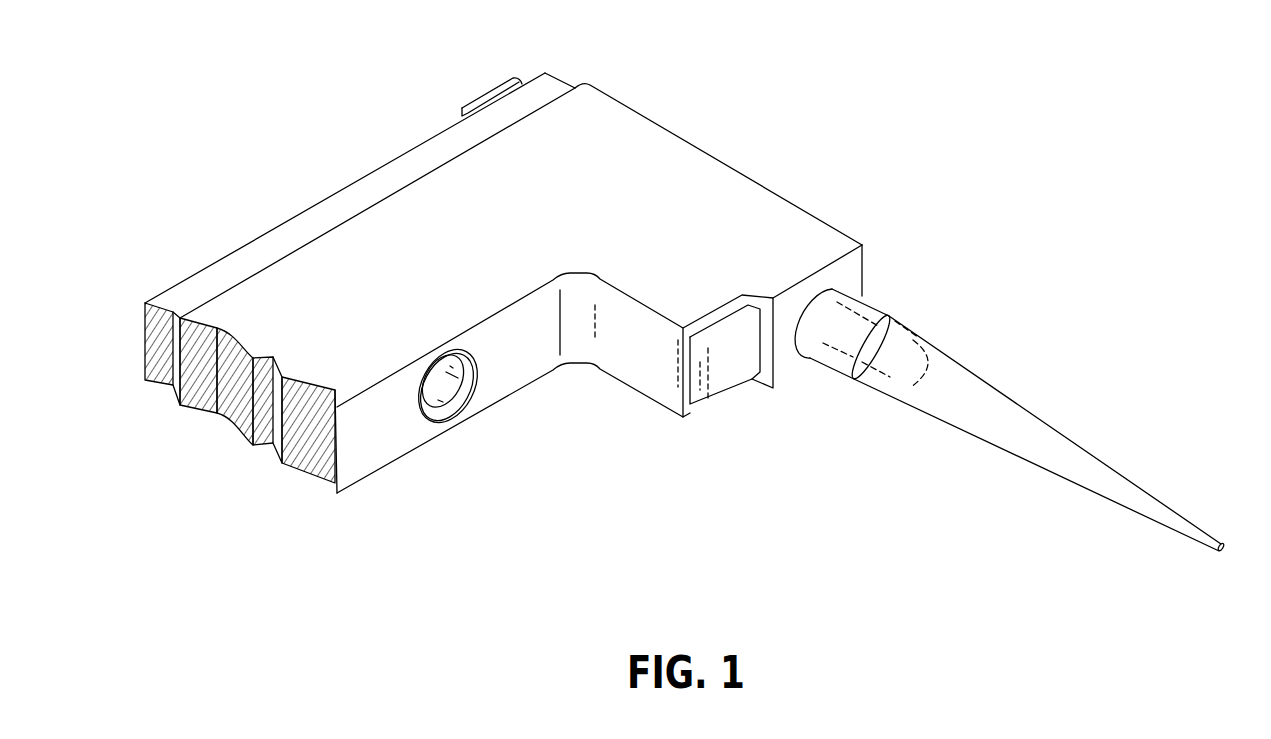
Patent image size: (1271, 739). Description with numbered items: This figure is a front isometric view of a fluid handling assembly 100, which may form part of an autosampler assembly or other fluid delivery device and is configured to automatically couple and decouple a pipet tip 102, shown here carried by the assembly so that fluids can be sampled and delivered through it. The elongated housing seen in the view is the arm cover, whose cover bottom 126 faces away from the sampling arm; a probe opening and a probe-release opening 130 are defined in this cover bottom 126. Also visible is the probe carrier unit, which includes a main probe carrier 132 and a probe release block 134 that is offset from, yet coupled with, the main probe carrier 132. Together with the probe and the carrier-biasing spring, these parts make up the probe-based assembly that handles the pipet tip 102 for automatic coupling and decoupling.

The fluid handling assembly 100 is at (820, 118).
The pipet tip 102 is at (1048, 442).
The cover bottom 126 is at (850, 271).
The probe-release opening 130 is at (767, 352).
The main probe carrier 132 is at (490, 92).
The probe release block 134 is at (718, 383).